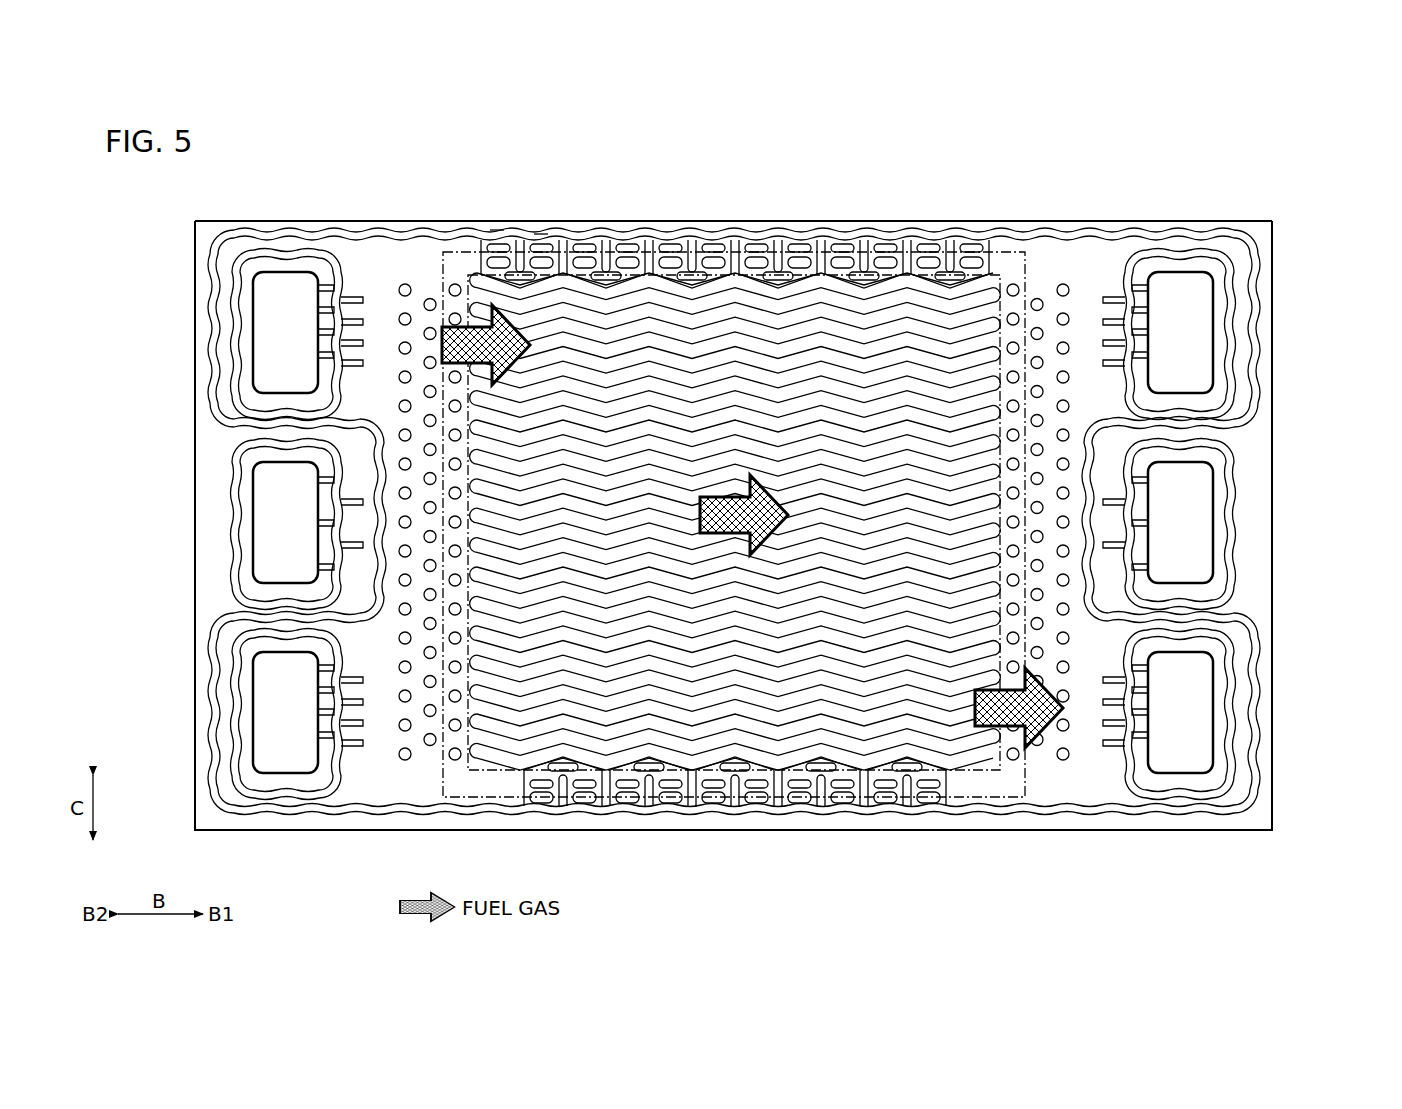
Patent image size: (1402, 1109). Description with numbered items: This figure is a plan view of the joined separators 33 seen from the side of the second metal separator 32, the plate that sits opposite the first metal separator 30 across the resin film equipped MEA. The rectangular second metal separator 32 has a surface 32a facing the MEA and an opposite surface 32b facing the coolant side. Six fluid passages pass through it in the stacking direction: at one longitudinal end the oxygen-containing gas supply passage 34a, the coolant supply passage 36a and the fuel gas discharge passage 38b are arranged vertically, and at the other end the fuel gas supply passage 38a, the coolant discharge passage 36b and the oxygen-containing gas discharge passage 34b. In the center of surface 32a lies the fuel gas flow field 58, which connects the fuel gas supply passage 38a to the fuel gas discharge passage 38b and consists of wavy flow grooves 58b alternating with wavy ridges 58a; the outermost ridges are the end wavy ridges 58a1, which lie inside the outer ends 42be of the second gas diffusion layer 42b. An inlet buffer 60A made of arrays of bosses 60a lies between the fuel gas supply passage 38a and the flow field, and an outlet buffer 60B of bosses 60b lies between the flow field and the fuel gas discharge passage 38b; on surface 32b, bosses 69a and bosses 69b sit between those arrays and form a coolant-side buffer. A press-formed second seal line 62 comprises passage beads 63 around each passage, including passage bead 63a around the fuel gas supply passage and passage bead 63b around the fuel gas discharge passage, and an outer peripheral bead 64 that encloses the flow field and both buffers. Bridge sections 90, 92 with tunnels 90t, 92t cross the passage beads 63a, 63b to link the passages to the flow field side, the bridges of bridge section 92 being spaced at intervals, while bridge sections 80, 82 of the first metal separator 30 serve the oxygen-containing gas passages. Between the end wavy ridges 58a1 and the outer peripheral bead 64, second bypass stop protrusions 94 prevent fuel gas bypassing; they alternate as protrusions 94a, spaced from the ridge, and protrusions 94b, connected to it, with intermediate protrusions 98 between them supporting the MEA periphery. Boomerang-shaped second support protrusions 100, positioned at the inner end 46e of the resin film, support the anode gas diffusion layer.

The first metal separator 30 is at (604, 217).
The second metal separator 32 is at (585, 217).
The surface 32a is at (497, 228).
The surface 32b is at (541, 232).
The separator sheet 33 is at (1248, 145).
The oxygen-containing gas supply passage 34a is at (1197, 320).
The oxygen-containing gas discharge passage 34b is at (268, 693).
The coolant supply passage 36a is at (1197, 503).
The coolant discharge passage 36b is at (265, 502).
The fuel gas supply passage 38a is at (267, 300).
The fuel gas discharge passage 38b is at (1200, 698).
The second gas diffusion layer 42b is at (720, 457).
The outer ends 42be is at (441, 250).
The inner end 46e is at (973, 772).
The fuel gas flow field 58 is at (749, 521).
The wavy ridges 58a is at (749, 521).
The end wavy ridges 58a1 is at (668, 318).
The wavy flow grooves 58b is at (695, 310).
The inlet buffer 60A is at (268, 522).
The bosses 60a is at (449, 579).
The outlet buffer 60B is at (1200, 522).
The bosses 60b is at (1019, 608).
The second seal line 62 is at (712, 567).
The passage beads 63 is at (712, 560).
The passage bead 63a is at (230, 318).
The passage bead 63b is at (1290, 868).
The outer peripheral bead 64 is at (1166, 814).
The bosses 69a is at (430, 297).
The bosses 69b is at (1040, 297).
The bridge section 80 is at (1113, 268).
The bridge section 82 is at (353, 764).
The bridge section 90 is at (355, 251).
The tunnels 90t is at (353, 297).
The bridge section 92 is at (1100, 777).
The tunnels 92t is at (1140, 738).
The second bypass stop protrusions 94 is at (735, 525).
The second bypass stop protrusions 94a is at (757, 262).
The second bypass stop protrusions 94b is at (840, 262).
The intermediate protrusions 98 is at (837, 246).
The second support protrusions 100 is at (777, 252).